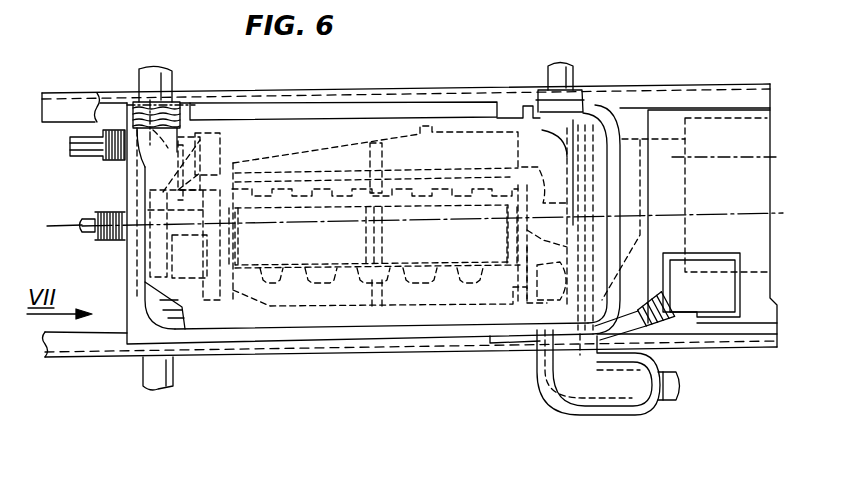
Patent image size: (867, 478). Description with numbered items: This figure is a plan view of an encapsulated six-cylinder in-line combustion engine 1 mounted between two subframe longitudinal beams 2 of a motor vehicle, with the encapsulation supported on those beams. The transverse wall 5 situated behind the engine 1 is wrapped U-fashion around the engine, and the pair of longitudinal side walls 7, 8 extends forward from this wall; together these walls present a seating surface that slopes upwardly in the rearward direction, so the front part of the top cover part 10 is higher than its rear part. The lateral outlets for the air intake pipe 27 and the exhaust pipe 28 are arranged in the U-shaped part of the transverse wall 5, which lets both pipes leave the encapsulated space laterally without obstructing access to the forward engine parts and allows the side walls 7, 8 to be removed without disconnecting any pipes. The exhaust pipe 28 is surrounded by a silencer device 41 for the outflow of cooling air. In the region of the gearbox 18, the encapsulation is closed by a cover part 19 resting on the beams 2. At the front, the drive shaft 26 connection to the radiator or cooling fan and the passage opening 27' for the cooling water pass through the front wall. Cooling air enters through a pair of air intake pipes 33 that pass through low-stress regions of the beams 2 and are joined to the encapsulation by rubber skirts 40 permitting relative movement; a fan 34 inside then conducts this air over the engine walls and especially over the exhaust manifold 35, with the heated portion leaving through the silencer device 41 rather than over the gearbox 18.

The combustion engine 1 is at (327, 250).
The subframe longitudinal beams 2 is at (58, 108).
The transverse wall 5 is at (608, 115).
The longitudinal side wall 7 is at (395, 117).
The longitudinal side wall 8 is at (403, 327).
The top cover part 10 is at (270, 320).
The gearbox 18 is at (740, 128).
The cover part 19 is at (697, 117).
The drive shaft 26 is at (88, 236).
The air intake pipe 27 is at (577, 79).
The passage opening for cooling water 27' is at (88, 161).
The exhaust pipe 28 is at (672, 388).
The air intake pipes 33 is at (148, 82).
The fan 34 is at (138, 250).
The exhaust manifold 35 is at (443, 297).
The rubber skirts 40 is at (168, 108).
The silencer device 41 is at (612, 410).